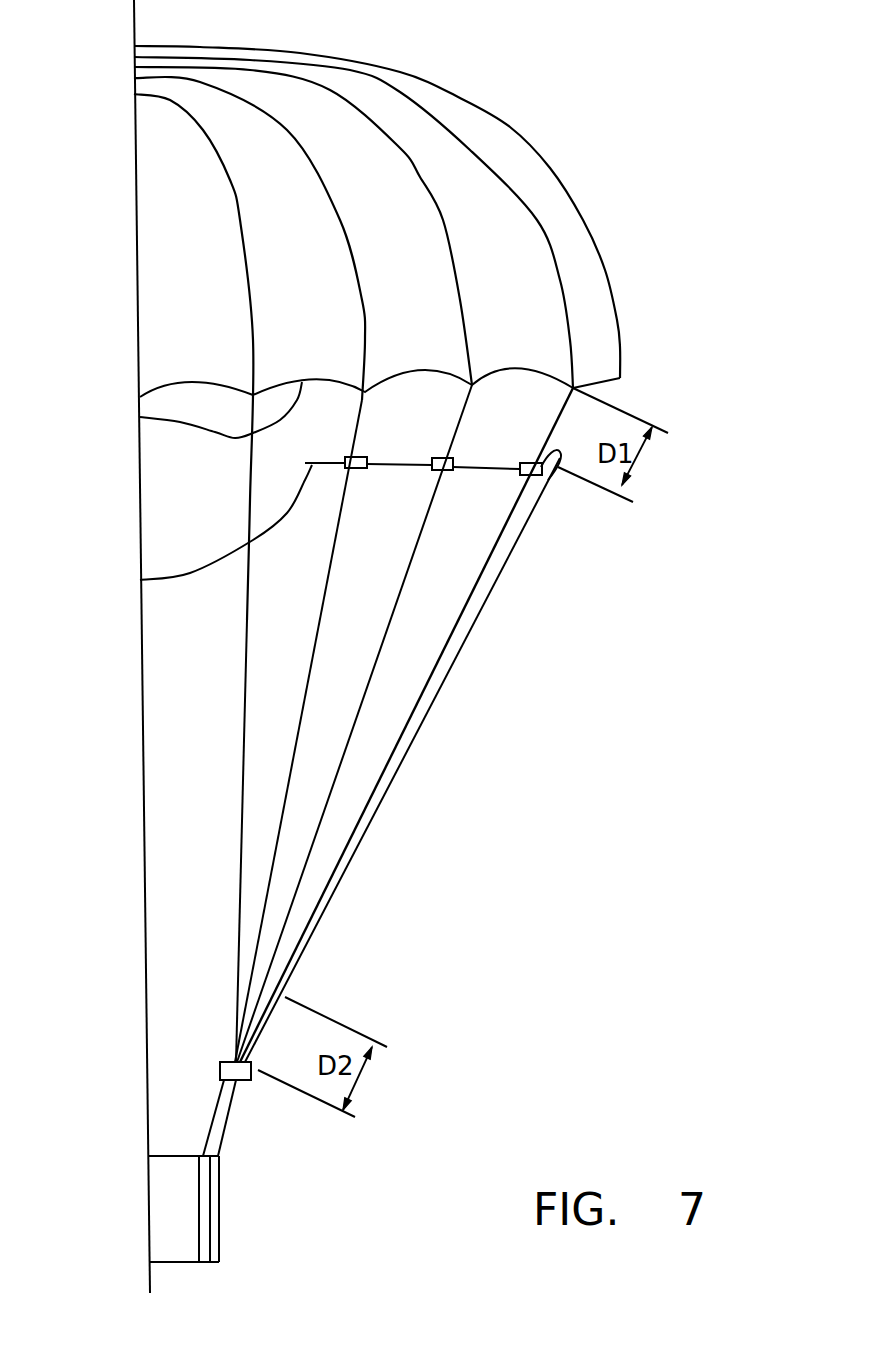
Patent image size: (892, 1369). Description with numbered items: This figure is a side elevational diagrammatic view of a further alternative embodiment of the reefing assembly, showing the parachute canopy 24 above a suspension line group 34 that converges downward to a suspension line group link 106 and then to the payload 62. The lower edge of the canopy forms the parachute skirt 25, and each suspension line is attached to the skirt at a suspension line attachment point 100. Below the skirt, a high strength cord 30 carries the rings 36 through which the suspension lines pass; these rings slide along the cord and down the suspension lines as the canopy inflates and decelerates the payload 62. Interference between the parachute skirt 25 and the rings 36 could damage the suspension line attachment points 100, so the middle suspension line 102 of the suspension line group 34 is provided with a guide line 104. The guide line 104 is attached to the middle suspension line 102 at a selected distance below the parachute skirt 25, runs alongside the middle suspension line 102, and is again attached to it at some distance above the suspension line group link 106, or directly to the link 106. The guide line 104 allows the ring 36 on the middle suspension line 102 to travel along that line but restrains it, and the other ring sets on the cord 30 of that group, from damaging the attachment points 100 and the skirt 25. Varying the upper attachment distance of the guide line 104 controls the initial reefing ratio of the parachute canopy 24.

The parachute canopy 24 is at (500, 108).
The suspension line attachment point 100 is at (594, 383).
The parachute skirt 25 is at (140, 414).
The high strength cord 30 is at (140, 580).
The ring 36 is at (357, 470).
The middle suspension line 102 is at (393, 753).
The guide line 104 is at (460, 653).
The suspension line group 34 is at (352, 897).
The suspension line group link 106 is at (253, 1095).
The payload 62 is at (212, 1209).